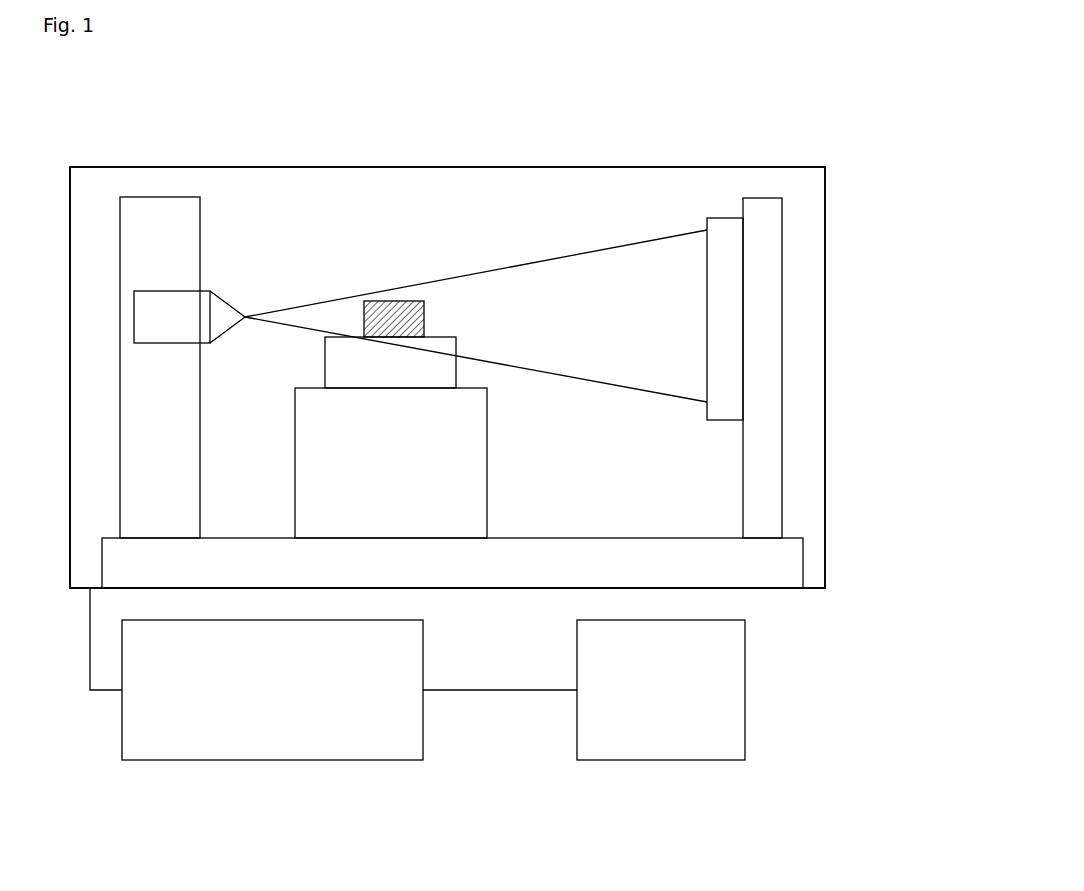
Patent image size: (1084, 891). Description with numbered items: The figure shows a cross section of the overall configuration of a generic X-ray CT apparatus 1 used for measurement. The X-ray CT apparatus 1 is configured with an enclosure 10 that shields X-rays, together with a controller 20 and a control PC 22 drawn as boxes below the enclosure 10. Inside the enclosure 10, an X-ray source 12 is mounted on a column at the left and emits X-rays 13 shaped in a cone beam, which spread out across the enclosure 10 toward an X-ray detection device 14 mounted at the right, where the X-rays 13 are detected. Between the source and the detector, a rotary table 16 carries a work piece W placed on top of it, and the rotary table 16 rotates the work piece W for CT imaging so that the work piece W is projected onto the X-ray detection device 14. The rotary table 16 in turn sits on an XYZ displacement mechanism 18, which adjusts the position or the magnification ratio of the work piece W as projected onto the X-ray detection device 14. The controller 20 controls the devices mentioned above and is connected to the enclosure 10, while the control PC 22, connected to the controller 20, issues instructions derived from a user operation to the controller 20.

The X-ray CT apparatus 1 is at (843, 98).
The enclosure 10 is at (70, 167).
The X-ray source 12 is at (150, 343).
The X-rays 13 is at (600, 247).
The X-ray detection device 14 is at (723, 278).
The work piece W is at (410, 320).
The rotary table 16 is at (456, 376).
The XYZ displacement mechanism 18 is at (487, 480).
The controller 20 is at (343, 620).
The control PC 22 is at (687, 620).